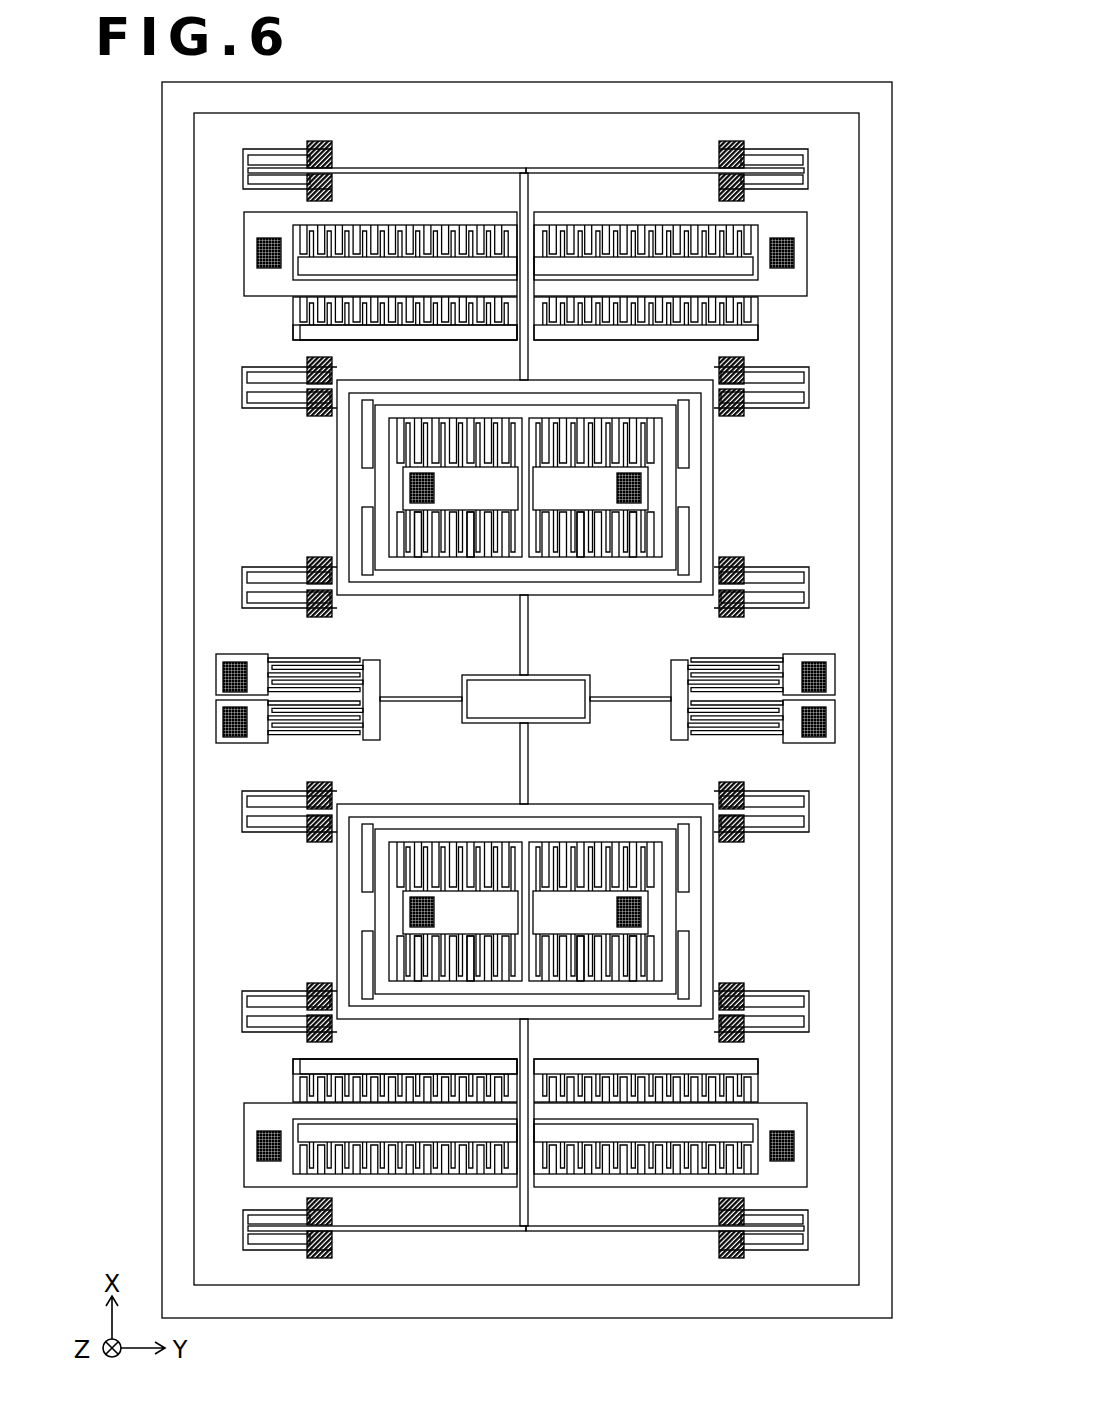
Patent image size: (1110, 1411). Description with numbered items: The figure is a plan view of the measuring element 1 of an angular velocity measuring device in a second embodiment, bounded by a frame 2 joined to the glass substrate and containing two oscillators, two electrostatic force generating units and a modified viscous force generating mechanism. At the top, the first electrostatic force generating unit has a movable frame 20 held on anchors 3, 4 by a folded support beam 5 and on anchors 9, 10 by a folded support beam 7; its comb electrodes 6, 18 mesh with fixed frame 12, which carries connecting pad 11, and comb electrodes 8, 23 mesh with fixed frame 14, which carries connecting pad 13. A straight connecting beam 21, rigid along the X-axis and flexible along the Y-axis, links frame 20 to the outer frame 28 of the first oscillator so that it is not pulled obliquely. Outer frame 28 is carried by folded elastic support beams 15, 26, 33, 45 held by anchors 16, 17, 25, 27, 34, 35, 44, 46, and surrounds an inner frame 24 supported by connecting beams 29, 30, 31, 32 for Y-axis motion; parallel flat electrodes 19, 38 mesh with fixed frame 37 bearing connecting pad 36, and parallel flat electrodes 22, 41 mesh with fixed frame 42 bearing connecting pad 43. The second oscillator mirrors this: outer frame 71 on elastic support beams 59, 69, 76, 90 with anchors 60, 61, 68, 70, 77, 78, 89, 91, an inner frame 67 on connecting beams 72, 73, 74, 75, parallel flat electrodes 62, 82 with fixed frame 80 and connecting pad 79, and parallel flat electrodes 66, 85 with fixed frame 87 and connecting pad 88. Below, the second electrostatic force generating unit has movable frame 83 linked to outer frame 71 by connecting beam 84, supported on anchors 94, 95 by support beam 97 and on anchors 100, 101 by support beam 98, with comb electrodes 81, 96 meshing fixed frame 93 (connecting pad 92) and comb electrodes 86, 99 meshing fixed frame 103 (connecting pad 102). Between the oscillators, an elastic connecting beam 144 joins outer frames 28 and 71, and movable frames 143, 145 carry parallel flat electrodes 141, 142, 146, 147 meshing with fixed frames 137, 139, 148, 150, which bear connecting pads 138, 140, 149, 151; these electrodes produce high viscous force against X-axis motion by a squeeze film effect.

The measuring element 1 is at (683, 80).
The frame 2 is at (787, 110).
The anchor 3 is at (333, 152).
The anchor 4 is at (333, 189).
The support beam 5 is at (453, 167).
The comb electrode 6 is at (440, 238).
The support beam 7 is at (598, 167).
The comb electrode 8 is at (607, 238).
The anchor 9 is at (718, 152).
The anchor 10 is at (718, 189).
The connecting pad 11 is at (257, 244).
The frame 12 is at (255, 284).
The connecting pad 13 is at (794, 244).
The frame 14 is at (797, 284).
The elastic support beam 15 is at (243, 382).
The anchor 16 is at (307, 362).
The anchor 17 is at (307, 410).
The comb electrode 18 is at (410, 330).
The parallel flat electrode 19 is at (463, 428).
The frame 20 is at (510, 332).
The connecting beam 21 is at (533, 356).
The parallel flat electrode 22 is at (572, 428).
The comb electrode 23 is at (622, 332).
The inner frame 24 is at (665, 410).
The anchor 25 is at (745, 362).
The elastic support beam 26 is at (809, 382).
The anchor 27 is at (745, 410).
The outer frame 28 is at (337, 477).
The connecting beam 29 is at (362, 452).
The connecting beam 30 is at (362, 527).
The connecting beam 31 is at (689, 452).
The connecting beam 32 is at (689, 527).
The elastic support beam 33 is at (243, 577).
The anchor 34 is at (307, 562).
The anchor 35 is at (307, 612).
The connecting pad 36 is at (410, 487).
The frame 37 is at (440, 520).
The parallel flat electrode 38 is at (480, 520).
The parallel flat electrode 41 is at (572, 520).
The frame 42 is at (607, 520).
The connecting pad 43 is at (641, 487).
The anchor 44 is at (744, 562).
The elastic support beam 45 is at (809, 577).
The anchor 46 is at (744, 612).
The elastic support beam 59 is at (243, 818).
The anchor 60 is at (307, 795).
The anchor 61 is at (307, 835).
The parallel flat electrode 62 is at (462, 855).
The parallel flat electrode 66 is at (585, 855).
The inner frame 67 is at (660, 835).
The anchor 68 is at (744, 795).
The elastic support beam 69 is at (809, 818).
The anchor 70 is at (744, 835).
The outer frame 71 is at (337, 920).
The connecting beam 72 is at (362, 870).
The connecting beam 73 is at (362, 945).
The connecting beam 74 is at (689, 870).
The connecting beam 75 is at (689, 945).
The elastic support beam 76 is at (243, 1010).
The anchor 77 is at (307, 990).
The anchor 78 is at (307, 1035).
The connecting pad 79 is at (410, 912).
The frame 80 is at (405, 980).
The comb electrode 81 is at (428, 1080).
The parallel flat electrode 82 is at (470, 985).
The frame 83 is at (494, 1080).
The connecting beam 84 is at (533, 1046).
The parallel flat electrode 85 is at (575, 985).
The comb electrode 86 is at (622, 1080).
The frame 87 is at (640, 985).
The connecting pad 88 is at (641, 912).
The anchor 89 is at (744, 990).
The elastic support beam 90 is at (809, 1010).
The anchor 91 is at (744, 1035).
The connecting pad 92 is at (260, 1160).
The frame 93 is at (255, 1120).
The anchor 94 is at (333, 1210).
The anchor 95 is at (333, 1245).
The comb electrode 96 is at (432, 1172).
The support beam 97 is at (452, 1232).
The support beam 98 is at (598, 1232).
The comb electrode 99 is at (610, 1172).
The anchor 100 is at (718, 1210).
The anchor 101 is at (718, 1245).
The connecting pad 102 is at (797, 1120).
The frame 103 is at (792, 1160).
The frame 137 is at (216, 660).
The connecting pad 138 is at (223, 677).
The frame 139 is at (223, 717).
The connecting pad 140 is at (216, 738).
The parallel flat electrode 141 is at (312, 660).
The parallel flat electrode 142 is at (312, 738).
The frame 143 is at (380, 672).
The elastic connecting beam 144 is at (540, 723).
The frame 145 is at (671, 672).
The parallel flat electrode 146 is at (738, 660).
The parallel flat electrode 147 is at (738, 738).
The frame 148 is at (835, 660).
The connecting pad 149 is at (826, 677).
The frame 150 is at (826, 717).
The connecting pad 151 is at (835, 738).